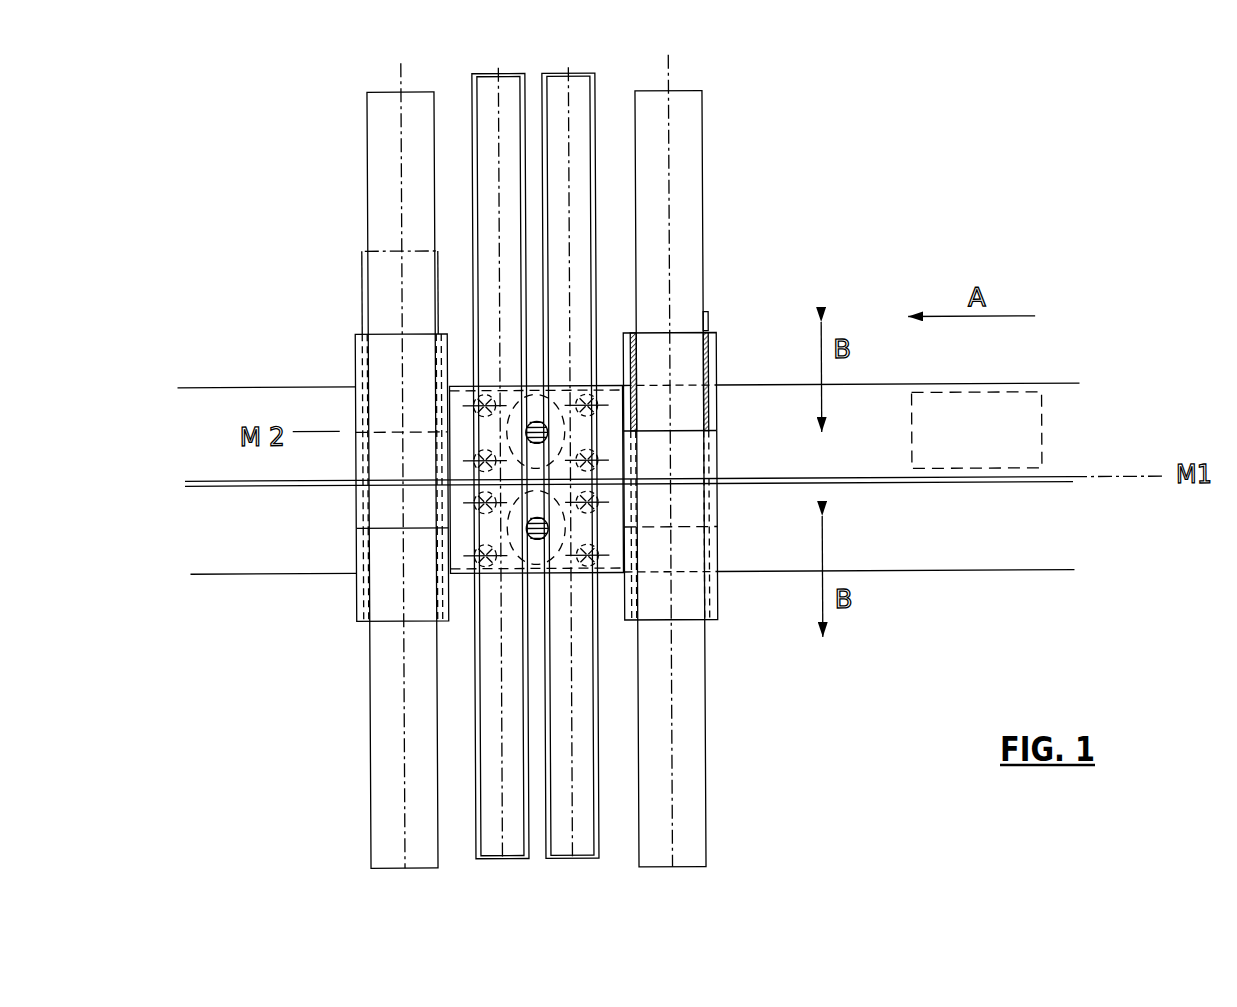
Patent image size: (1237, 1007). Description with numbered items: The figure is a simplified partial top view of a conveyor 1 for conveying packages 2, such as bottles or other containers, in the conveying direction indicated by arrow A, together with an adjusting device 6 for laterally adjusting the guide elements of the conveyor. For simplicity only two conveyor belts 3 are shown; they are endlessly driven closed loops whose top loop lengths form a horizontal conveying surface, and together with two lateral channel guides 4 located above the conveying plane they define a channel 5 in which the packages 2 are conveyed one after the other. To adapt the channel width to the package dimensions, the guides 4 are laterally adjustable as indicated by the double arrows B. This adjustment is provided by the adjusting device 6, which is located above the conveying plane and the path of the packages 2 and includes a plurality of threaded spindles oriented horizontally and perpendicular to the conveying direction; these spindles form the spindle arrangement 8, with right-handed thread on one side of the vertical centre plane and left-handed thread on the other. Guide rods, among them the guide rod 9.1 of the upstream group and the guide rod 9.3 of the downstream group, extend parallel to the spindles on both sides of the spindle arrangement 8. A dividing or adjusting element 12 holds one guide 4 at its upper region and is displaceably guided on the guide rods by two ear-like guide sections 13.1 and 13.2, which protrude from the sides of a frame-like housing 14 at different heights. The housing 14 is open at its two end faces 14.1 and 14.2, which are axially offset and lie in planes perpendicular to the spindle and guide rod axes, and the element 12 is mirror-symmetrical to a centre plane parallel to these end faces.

The conveyor 1 is at (1035, 345).
The packages 2 is at (995, 456).
The conveyor belts 3 is at (1128, 415).
The channel guides 4 is at (629, 479).
The channel 5 is at (882, 450).
The adjusting device 6 is at (725, 303).
The spindle arrangement 8 is at (613, 753).
The guide rod 9.1 is at (384, 118).
The guide rod 9.3 is at (690, 116).
The dividing or adjusting element 12 is at (601, 361).
The guide section 13.1 is at (532, 464).
The guide section 13.2 is at (533, 484).
The frame-like housing 14 is at (531, 386).
The end face 14.1 is at (576, 322).
The end face 14.2 is at (414, 614).